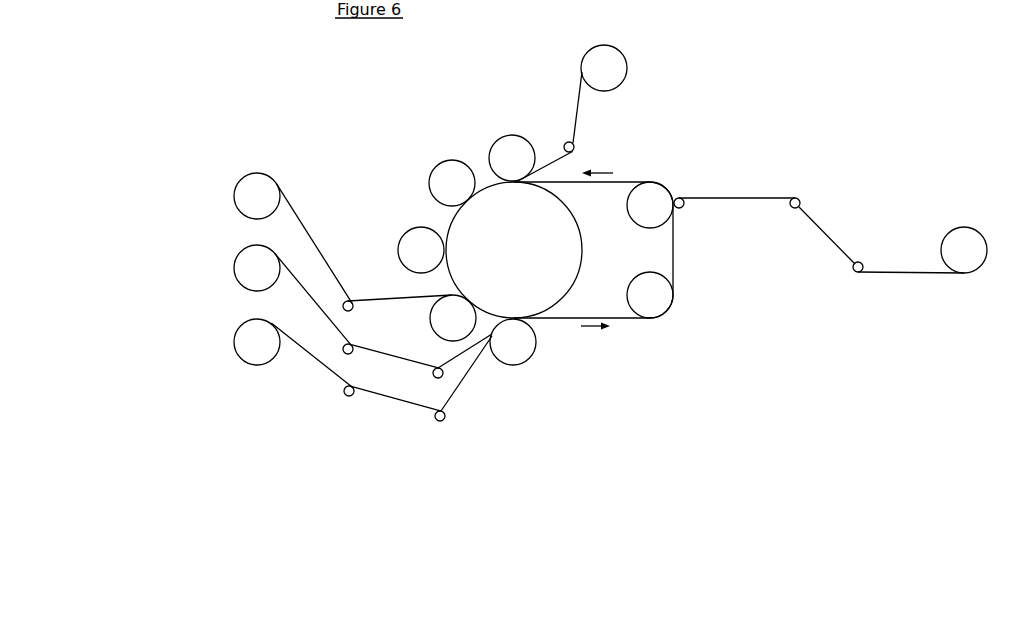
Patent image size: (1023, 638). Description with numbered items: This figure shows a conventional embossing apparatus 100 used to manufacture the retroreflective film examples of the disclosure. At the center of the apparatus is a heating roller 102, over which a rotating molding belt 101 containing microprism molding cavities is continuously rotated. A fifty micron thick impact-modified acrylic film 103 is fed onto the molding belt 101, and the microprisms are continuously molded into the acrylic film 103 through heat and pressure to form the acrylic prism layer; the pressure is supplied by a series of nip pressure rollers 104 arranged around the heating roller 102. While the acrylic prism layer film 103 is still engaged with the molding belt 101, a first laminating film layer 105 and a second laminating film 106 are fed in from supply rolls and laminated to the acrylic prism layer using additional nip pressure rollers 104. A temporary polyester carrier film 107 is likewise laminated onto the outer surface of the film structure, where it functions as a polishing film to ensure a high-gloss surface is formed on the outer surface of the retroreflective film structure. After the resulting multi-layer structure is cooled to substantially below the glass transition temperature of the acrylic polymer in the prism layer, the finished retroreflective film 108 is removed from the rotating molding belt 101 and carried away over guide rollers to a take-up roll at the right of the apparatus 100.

The embossing apparatus 100 is at (300, 74).
The rotating molding belt 101 is at (617, 182).
The heating roller 102 is at (550, 292).
The impact-modified acrylic film 103 is at (578, 102).
The nip pressure rollers 104 is at (502, 148).
The first laminating film layer 105 is at (291, 205).
The second laminating film 106 is at (299, 281).
The temporary polyester carrier film 107 is at (312, 364).
The retroreflective film 108 is at (741, 190).